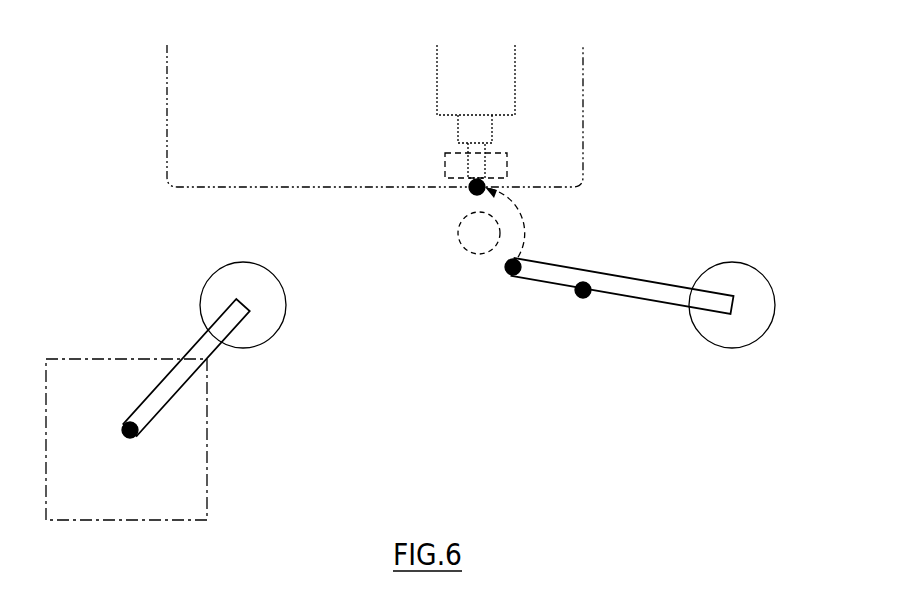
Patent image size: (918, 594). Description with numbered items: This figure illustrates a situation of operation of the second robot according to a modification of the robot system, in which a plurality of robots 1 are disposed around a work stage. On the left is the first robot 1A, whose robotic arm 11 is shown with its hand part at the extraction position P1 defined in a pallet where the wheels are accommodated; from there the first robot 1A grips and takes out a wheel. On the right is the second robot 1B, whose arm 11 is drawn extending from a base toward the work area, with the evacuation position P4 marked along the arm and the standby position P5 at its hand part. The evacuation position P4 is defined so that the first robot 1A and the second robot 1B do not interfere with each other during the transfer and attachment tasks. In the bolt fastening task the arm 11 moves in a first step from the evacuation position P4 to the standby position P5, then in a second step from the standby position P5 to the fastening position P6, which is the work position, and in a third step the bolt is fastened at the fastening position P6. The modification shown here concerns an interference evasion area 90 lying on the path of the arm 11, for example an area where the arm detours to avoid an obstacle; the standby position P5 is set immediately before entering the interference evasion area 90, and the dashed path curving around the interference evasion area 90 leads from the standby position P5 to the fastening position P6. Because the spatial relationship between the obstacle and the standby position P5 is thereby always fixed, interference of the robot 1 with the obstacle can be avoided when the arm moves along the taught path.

The robot 1 is at (449, 320).
The first robot 1A is at (177, 305).
The second robot 1B is at (655, 319).
The robotic arm 11 is at (449, 320).
The interference evasion area 90 is at (457, 238).
The extraction position P1 is at (139, 433).
The evacuation position P4 is at (577, 294).
The standby position P5 is at (506, 270).
The fastening position P6 is at (486, 190).